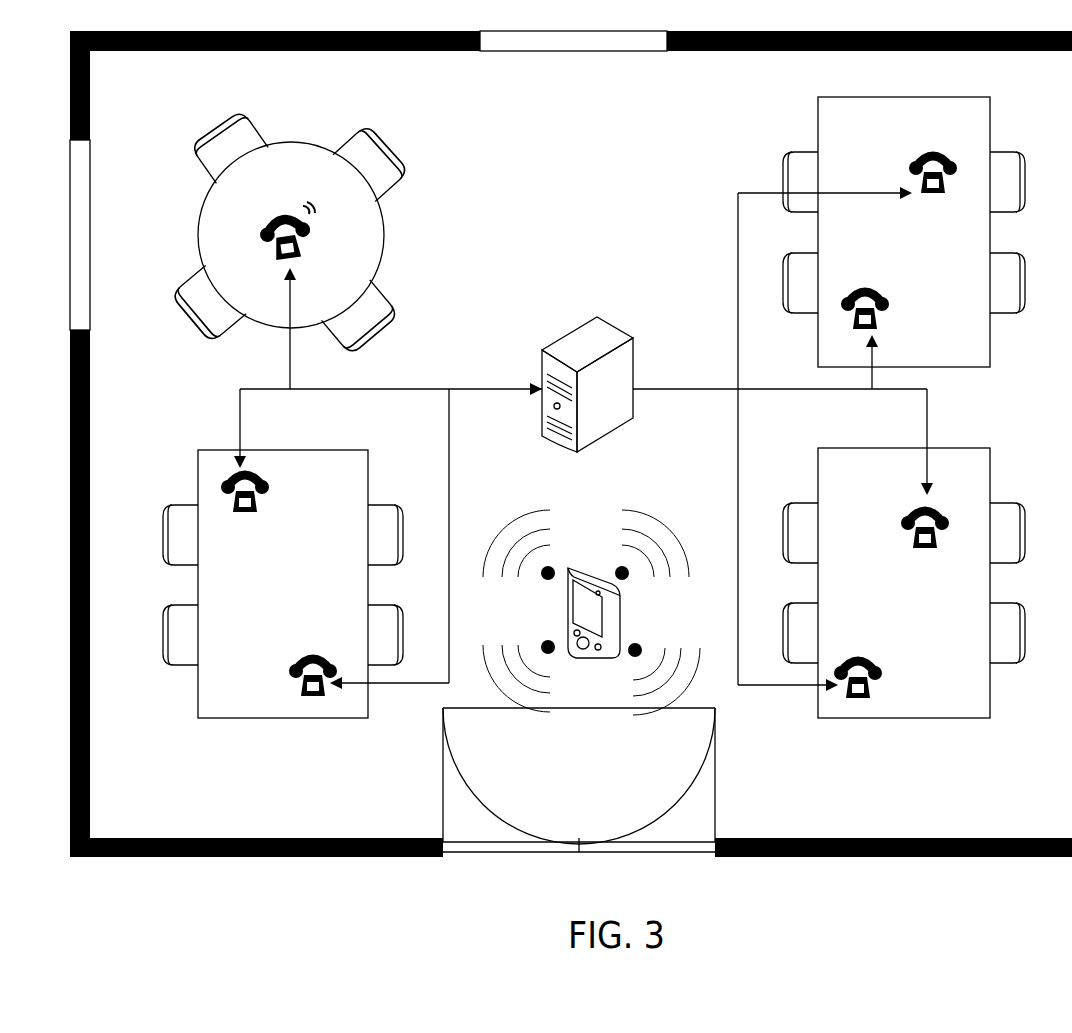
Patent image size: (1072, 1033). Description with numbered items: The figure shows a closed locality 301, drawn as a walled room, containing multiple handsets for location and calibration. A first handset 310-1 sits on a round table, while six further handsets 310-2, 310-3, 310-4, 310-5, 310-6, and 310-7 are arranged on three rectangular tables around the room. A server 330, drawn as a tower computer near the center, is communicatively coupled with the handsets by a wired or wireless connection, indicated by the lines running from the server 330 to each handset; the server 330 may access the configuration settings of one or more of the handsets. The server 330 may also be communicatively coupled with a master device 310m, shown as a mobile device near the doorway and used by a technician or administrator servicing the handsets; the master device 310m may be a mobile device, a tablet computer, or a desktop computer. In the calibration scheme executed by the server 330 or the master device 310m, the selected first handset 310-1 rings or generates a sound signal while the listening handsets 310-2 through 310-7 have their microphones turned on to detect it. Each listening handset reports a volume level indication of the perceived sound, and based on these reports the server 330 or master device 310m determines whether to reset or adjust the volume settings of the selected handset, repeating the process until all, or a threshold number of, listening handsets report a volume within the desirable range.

The closed locality 301 is at (637, 157).
The first handset 310-1 is at (293, 203).
The handset 310-2 is at (240, 512).
The handset 310-3 is at (290, 672).
The handset 310-4 is at (912, 178).
The handset 310-5 is at (860, 283).
The handset 310-6 is at (905, 530).
The handset 310-7 is at (860, 652).
The master device 310m is at (593, 662).
The server 330 is at (597, 438).